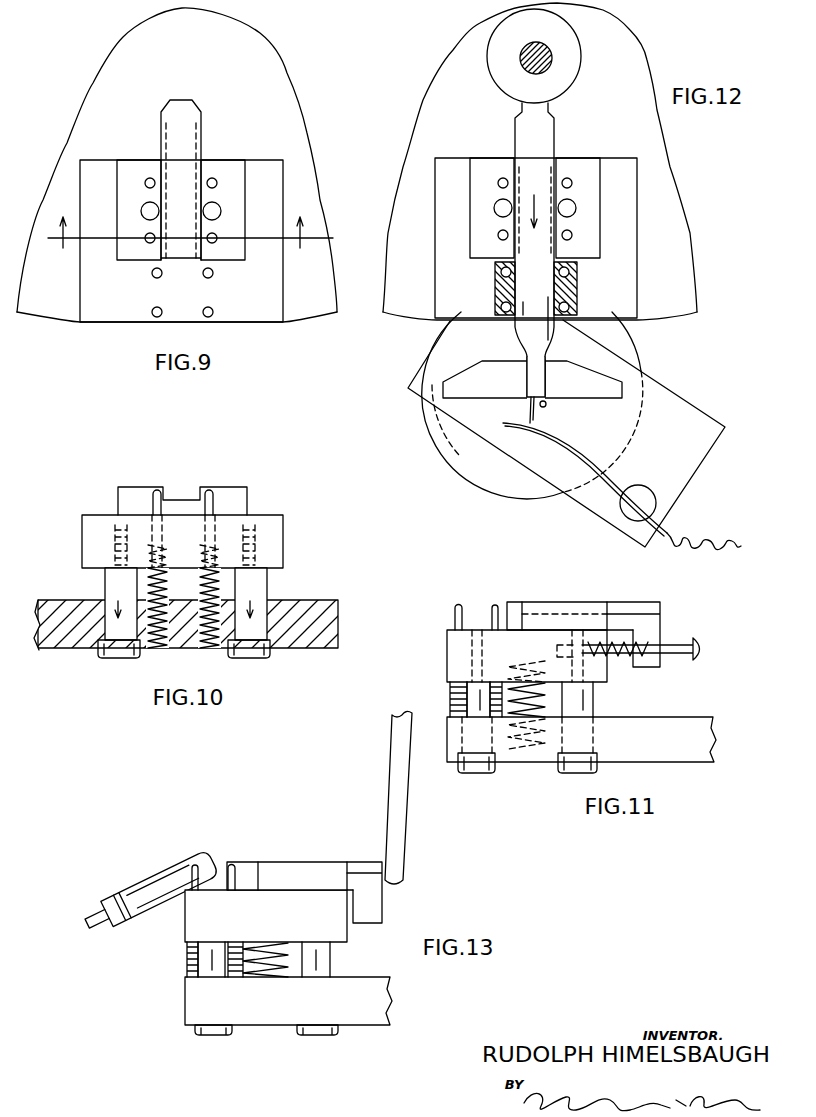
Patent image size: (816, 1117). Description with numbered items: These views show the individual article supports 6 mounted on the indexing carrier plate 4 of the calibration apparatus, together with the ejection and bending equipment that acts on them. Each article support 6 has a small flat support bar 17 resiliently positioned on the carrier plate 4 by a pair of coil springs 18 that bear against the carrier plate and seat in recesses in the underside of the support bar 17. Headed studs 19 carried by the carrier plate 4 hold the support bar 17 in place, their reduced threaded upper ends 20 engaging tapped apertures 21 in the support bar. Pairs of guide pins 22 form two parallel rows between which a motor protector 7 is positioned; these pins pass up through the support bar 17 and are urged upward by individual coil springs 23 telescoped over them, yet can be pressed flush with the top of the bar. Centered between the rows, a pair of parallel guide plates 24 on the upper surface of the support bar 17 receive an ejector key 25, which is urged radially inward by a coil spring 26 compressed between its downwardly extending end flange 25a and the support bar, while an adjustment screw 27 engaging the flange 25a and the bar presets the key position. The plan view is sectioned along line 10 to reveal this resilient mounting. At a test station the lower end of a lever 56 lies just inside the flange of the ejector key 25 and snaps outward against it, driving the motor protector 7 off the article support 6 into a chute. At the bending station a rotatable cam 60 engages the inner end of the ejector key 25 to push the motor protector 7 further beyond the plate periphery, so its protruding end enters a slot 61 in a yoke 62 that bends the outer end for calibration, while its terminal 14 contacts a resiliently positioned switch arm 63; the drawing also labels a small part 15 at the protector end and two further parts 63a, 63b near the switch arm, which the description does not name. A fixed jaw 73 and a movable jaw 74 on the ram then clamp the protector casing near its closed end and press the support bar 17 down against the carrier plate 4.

In FIG. 9, the carrier plate 4 is at (287, 97).
In FIG. 12, the carrier plate 4 is at (445, 83).
In FIG. 10, the carrier plate 4 is at (337, 627).
In FIG. 11, the carrier plate 4 is at (697, 723).
In FIG. 13, the carrier plate 4 is at (188, 1012).
In FIG. 9, the article support 6 is at (232, 150).
In FIG. 10, the article support 6 is at (274, 498).
In FIG. 12, the motor protector 7 is at (508, 358).
In FIG. 13, the motor protector 7 is at (97, 949).
In FIG. 9, the section line 10— 10 is at (190, 243).
In FIG. 12, the terminal 14 is at (527, 418).
In FIG. 12, the needle eye / thread guide 15 is at (546, 406).
In FIG. 9, the support bar 17 is at (277, 297).
In FIG. 12, the support bar 17 is at (632, 262).
In FIG. 10, the support bar 17 is at (283, 535).
In FIG. 11, the support bar 17 is at (452, 650).
In FIG. 13, the support bar 17 is at (193, 918).
In FIG. 11, the coil springs 18 is at (543, 705).
In FIG. 13, the coil springs 18 is at (287, 978).
In FIG. 10, the headed studs 19 is at (120, 660).
In FIG. 11, the headed studs 19 is at (565, 773).
In FIG. 13, the headed studs 19 is at (213, 975).
In FIG. 10, the threaded upper ends 20 is at (110, 543).
In FIG. 10, the tapped apertures 21 is at (118, 513).
In FIG. 9, the guide pins 22 is at (152, 308).
In FIG. 12, the guide pins 22 is at (505, 263).
In FIG. 10, the guide pins 22 is at (209, 490).
In FIG. 11, the guide pins 22 is at (495, 605).
In FIG. 13, the guide pins 22 is at (232, 863).
In FIG. 10, the coil springs 23 is at (211, 650).
In FIG. 11, the coil springs 23 is at (493, 685).
In FIG. 13, the coil springs 23 is at (187, 957).
In FIG. 9, the guide plates 24 is at (133, 167).
In FIG. 12, the guide plates 24 is at (486, 165).
In FIG. 10, the guide plates 24 is at (138, 493).
In FIG. 11, the guide plates 24 is at (562, 603).
In FIG. 13, the guide plates 24 is at (323, 867).
In FIG. 9, the ejector key 25 is at (200, 132).
In FIG. 12, the ejector key 25 is at (557, 147).
In FIG. 10, the ejector key 25 is at (187, 505).
In FIG. 11, the ejector key 25 is at (637, 603).
In FIG. 13, the ejector key 25 is at (315, 847).
In FIG. 11, the end flange 25a is at (657, 667).
In FIG. 13, the end flange 25a is at (385, 908).
In FIG. 11, the coil spring 26 is at (622, 660).
In FIG. 11, the adjustment screw 27 is at (702, 643).
In FIG. 13, the lever 56 is at (402, 805).
In FIG. 12, the cam 60 is at (583, 64).
In FIG. 12, the slot 61 is at (530, 377).
In FIG. 12, the yoke 62 is at (593, 390).
In FIG. 12, the switch arm 63 is at (553, 434).
In FIG. 12, the thread guide hole 63a is at (645, 495).
In FIG. 12, the thread guide plate 63b is at (675, 398).
In FIG. 12, the fixed jaw 73 is at (572, 289).
In FIG. 12, the movable jaw 74 is at (498, 279).